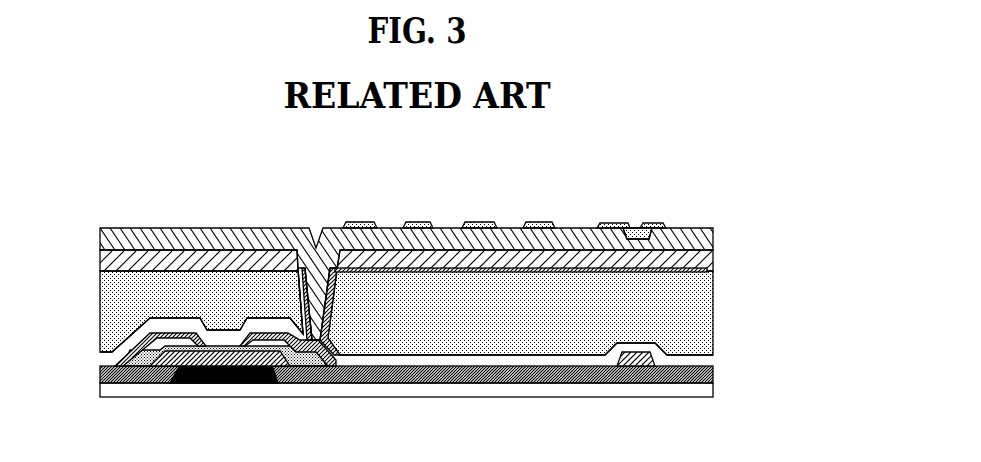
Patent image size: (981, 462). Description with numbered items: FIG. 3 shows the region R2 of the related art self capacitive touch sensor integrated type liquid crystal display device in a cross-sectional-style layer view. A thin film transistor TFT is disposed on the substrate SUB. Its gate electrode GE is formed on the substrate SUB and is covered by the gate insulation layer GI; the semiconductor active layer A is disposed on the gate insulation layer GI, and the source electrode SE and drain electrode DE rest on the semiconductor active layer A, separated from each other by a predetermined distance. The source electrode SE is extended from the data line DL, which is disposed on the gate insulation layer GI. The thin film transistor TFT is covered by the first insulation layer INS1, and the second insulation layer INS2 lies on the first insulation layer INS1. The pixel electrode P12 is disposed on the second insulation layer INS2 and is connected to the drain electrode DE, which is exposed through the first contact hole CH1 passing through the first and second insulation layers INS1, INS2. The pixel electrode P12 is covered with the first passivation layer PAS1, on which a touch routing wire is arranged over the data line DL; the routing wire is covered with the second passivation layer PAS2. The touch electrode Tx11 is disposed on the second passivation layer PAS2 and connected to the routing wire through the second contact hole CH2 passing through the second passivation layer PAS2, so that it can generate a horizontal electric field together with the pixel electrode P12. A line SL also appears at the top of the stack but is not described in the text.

The region R2 is at (73, 186).
The thin film transistor TFT is at (430, 353).
The gate electrode GE is at (222, 383).
The semiconductor active layer A is at (145, 383).
The source electrode SE is at (118, 383).
The drain electrode DE is at (323, 383).
The gate insulation layer GI is at (713, 376).
The substrate SUB is at (713, 392).
The first insulation layer INS1 is at (713, 360).
The second insulation layer INS2 is at (713, 317).
The first passivation layer PAS1 is at (713, 260).
The second passivation layer PAS2 is at (713, 240).
The pixel electrode P12 is at (504, 268).
The first contact hole CH1 is at (304, 296).
The second contact hole CH2 is at (660, 234).
The sensing line SL is at (386, 222).
The touch electrode Tx11 is at (421, 222).
The data line DL is at (637, 366).